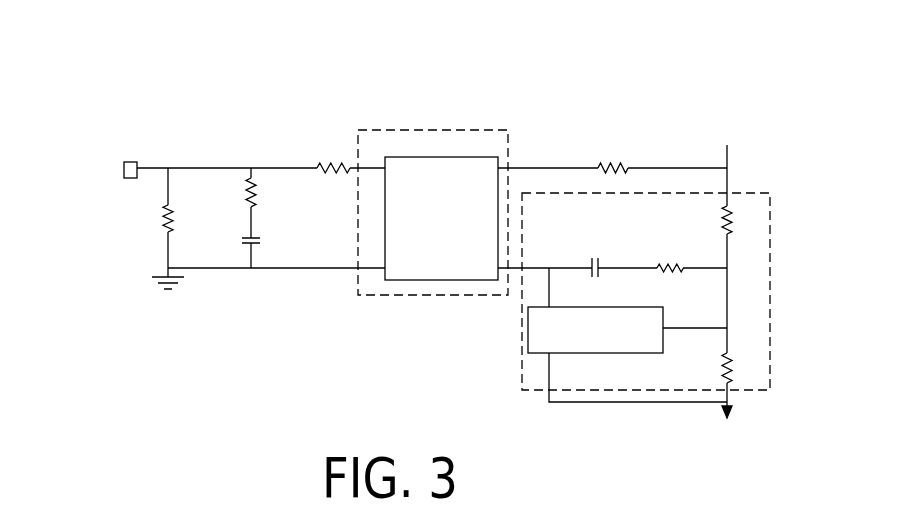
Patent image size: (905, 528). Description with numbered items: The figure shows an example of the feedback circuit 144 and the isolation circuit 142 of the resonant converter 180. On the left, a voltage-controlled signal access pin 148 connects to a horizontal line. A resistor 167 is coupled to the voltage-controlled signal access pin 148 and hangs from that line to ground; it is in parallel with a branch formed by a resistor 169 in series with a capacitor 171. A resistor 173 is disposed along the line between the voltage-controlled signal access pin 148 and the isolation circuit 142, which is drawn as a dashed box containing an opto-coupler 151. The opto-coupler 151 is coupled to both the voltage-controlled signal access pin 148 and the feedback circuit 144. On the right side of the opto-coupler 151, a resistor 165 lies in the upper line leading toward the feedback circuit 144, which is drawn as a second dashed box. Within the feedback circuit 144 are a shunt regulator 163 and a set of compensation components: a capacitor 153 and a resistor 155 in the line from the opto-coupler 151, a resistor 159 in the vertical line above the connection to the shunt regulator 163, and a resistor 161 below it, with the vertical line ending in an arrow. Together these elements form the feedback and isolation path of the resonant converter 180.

The resonant converter 180 is at (86, 68).
The voltage-controlled signal access pin 148 is at (130, 160).
The resistor (Rfmin) 167 is at (165, 228).
The resistor (Rss) 169 is at (247, 197).
The capacitor (Css) 171 is at (242, 243).
The resistor 173 is at (323, 160).
The isolation circuit 142 is at (447, 130).
The opto-coupler 151 is at (475, 155).
The resistor 165 is at (625, 165).
The feedback circuit 144 is at (753, 192).
The capacitor 153 is at (602, 257).
The resistor 155 is at (673, 258).
The resistor 159 is at (733, 232).
The resistor 161 is at (733, 357).
The shunt regulator 163 is at (633, 353).